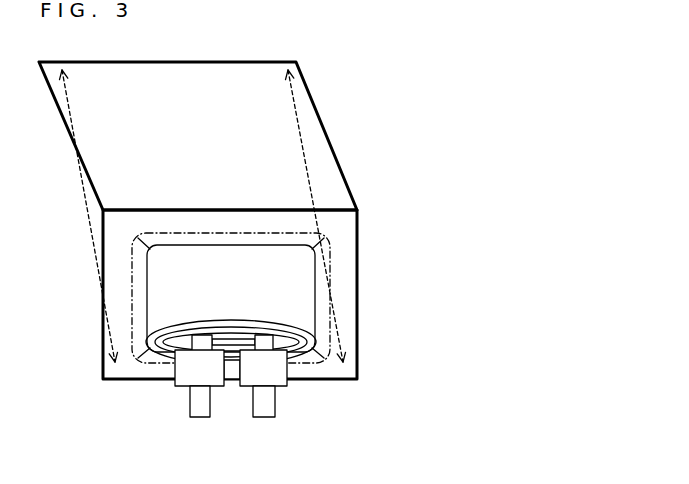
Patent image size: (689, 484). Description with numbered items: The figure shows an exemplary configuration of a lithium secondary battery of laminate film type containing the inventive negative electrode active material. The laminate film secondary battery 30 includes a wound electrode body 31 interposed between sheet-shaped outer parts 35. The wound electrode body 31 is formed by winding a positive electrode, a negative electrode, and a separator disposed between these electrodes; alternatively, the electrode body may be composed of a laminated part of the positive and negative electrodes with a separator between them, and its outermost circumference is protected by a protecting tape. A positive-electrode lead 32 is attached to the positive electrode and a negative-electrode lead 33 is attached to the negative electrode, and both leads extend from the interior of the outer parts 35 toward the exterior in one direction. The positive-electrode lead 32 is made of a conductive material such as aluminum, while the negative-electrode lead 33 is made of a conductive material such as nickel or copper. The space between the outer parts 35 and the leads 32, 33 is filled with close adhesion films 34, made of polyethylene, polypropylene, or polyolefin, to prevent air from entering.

The laminate film secondary battery 30 is at (215, 207).
The wound electrode body 31 is at (288, 287).
The positive-electrode lead 32 is at (197, 407).
The negative-electrode lead 33 is at (263, 405).
The close adhesion films 34 is at (278, 370).
The sheet-shaped outer parts 35 is at (243, 140).